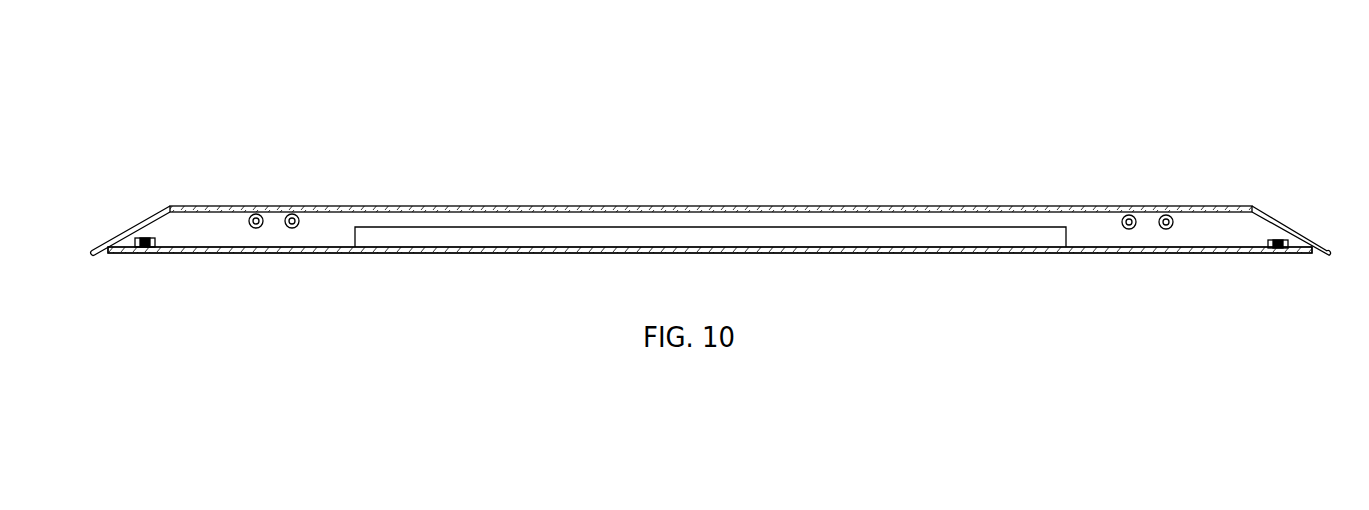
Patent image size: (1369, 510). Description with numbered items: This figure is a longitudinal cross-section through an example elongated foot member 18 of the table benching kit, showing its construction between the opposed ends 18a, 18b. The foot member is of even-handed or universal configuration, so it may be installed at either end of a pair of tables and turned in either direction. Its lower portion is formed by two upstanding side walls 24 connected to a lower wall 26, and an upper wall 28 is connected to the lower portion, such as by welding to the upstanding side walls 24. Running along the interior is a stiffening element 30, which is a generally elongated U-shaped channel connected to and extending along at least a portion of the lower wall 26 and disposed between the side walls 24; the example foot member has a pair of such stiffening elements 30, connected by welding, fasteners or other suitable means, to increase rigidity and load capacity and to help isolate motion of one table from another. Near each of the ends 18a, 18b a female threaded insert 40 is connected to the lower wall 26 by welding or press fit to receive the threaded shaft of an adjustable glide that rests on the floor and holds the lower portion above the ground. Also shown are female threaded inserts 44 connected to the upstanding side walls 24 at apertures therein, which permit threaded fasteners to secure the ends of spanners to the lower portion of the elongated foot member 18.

The elongated foot member 18 is at (730, 190).
The opposed end 18a is at (183, 201).
The opposed end 18b is at (1312, 236).
The upstanding side wall 24 is at (331, 232).
The lower wall 26 is at (550, 253).
The upper wall 28 is at (588, 207).
The stiffening element 30 is at (433, 235).
The female threaded insert 40 is at (143, 234).
The female threaded insert 44 is at (293, 212).